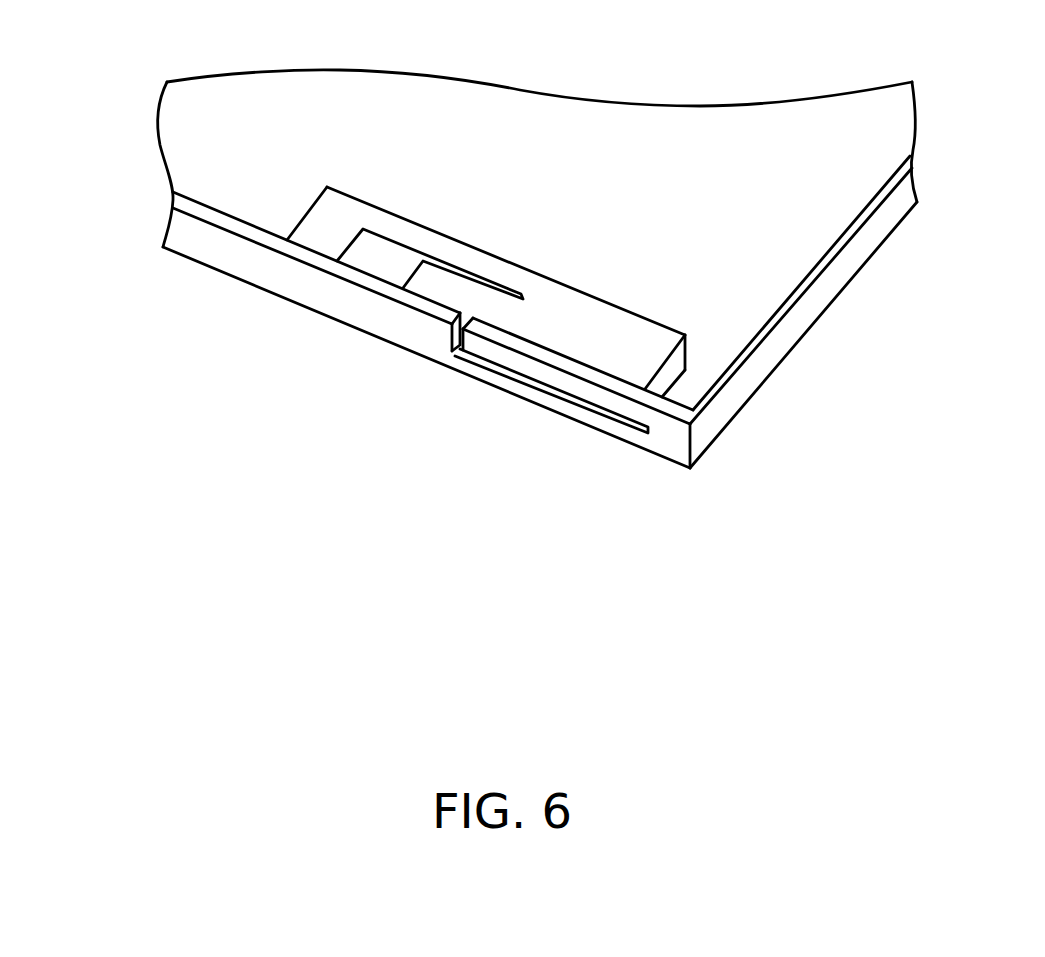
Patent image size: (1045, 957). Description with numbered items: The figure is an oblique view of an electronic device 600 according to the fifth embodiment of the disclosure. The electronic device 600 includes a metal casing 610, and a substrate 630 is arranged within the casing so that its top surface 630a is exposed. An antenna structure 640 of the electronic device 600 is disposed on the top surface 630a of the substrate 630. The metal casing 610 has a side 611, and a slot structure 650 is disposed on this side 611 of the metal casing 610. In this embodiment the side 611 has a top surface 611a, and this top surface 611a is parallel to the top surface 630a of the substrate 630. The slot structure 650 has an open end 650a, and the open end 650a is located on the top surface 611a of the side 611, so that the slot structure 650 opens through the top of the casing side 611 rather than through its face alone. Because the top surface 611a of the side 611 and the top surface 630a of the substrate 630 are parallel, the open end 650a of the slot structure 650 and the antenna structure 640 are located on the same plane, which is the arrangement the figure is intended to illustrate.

The electronic device 600 is at (889, 563).
The metal casing 610 is at (485, 269).
The side 611 is at (237, 258).
The top surface 611a is at (180, 201).
The substrate 630 is at (553, 255).
The top surface 630a is at (587, 318).
The antenna structure 640 is at (377, 252).
The slot structure 650 is at (472, 389).
The open end 650a is at (450, 318).